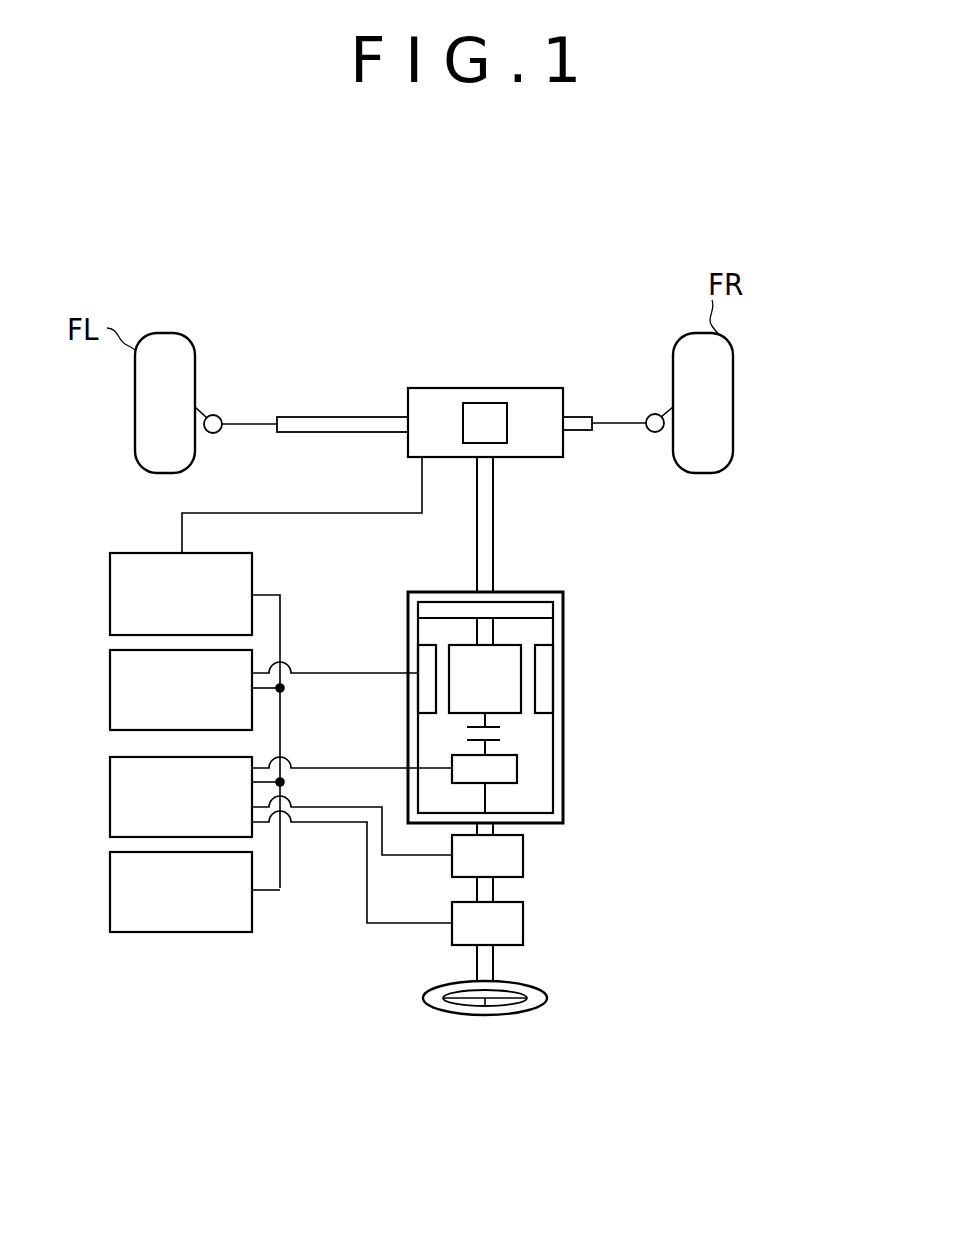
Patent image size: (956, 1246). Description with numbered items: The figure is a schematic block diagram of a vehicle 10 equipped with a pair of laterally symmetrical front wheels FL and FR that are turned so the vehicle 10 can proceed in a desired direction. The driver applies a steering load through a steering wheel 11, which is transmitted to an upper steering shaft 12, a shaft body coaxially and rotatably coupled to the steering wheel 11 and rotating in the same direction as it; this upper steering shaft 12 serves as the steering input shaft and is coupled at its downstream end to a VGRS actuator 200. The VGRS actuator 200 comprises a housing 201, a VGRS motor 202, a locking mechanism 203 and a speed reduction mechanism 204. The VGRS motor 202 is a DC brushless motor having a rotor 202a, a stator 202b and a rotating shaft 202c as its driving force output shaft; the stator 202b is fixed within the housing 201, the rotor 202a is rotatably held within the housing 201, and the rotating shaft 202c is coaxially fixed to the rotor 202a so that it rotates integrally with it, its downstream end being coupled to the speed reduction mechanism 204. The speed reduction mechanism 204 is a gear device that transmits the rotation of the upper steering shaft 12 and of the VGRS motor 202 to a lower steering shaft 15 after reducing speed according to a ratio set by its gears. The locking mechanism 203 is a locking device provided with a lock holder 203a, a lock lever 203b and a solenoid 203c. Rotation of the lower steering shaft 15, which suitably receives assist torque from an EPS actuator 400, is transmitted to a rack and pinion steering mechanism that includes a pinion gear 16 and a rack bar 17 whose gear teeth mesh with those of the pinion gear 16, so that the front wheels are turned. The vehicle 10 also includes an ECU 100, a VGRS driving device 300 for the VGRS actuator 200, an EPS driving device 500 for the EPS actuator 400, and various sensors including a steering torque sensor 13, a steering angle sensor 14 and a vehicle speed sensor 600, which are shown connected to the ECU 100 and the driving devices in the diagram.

The vehicle 10 is at (795, 195).
The steering wheel 11 is at (433, 1008).
The upper steering shaft 12 is at (487, 962).
The steering torque sensor 13 is at (522, 945).
The steering angle sensor 14 is at (522, 877).
The lower steering shaft 15 is at (485, 577).
The pinion gear 16 is at (478, 403).
The rack bar 17 is at (308, 417).
The ECU 100 is at (110, 757).
The VGRS actuator 200 is at (563, 776).
The housing 201 is at (563, 822).
The VGRS motor 202 is at (558, 666).
The rotor 202a is at (492, 662).
The stator 202b is at (547, 682).
The rotating shaft 202c is at (487, 630).
The locking mechanism 203 is at (640, 758).
The lock holder 203a is at (468, 728).
The lock lever 203b is at (468, 740).
The solenoid 203c is at (518, 767).
The speed reduction mechanism 204 is at (542, 610).
The VGRS driving device 300 is at (110, 650).
The EPS actuator 400 is at (558, 458).
The EPS driving device 500 is at (110, 553).
The vehicle speed sensor 600 is at (110, 852).